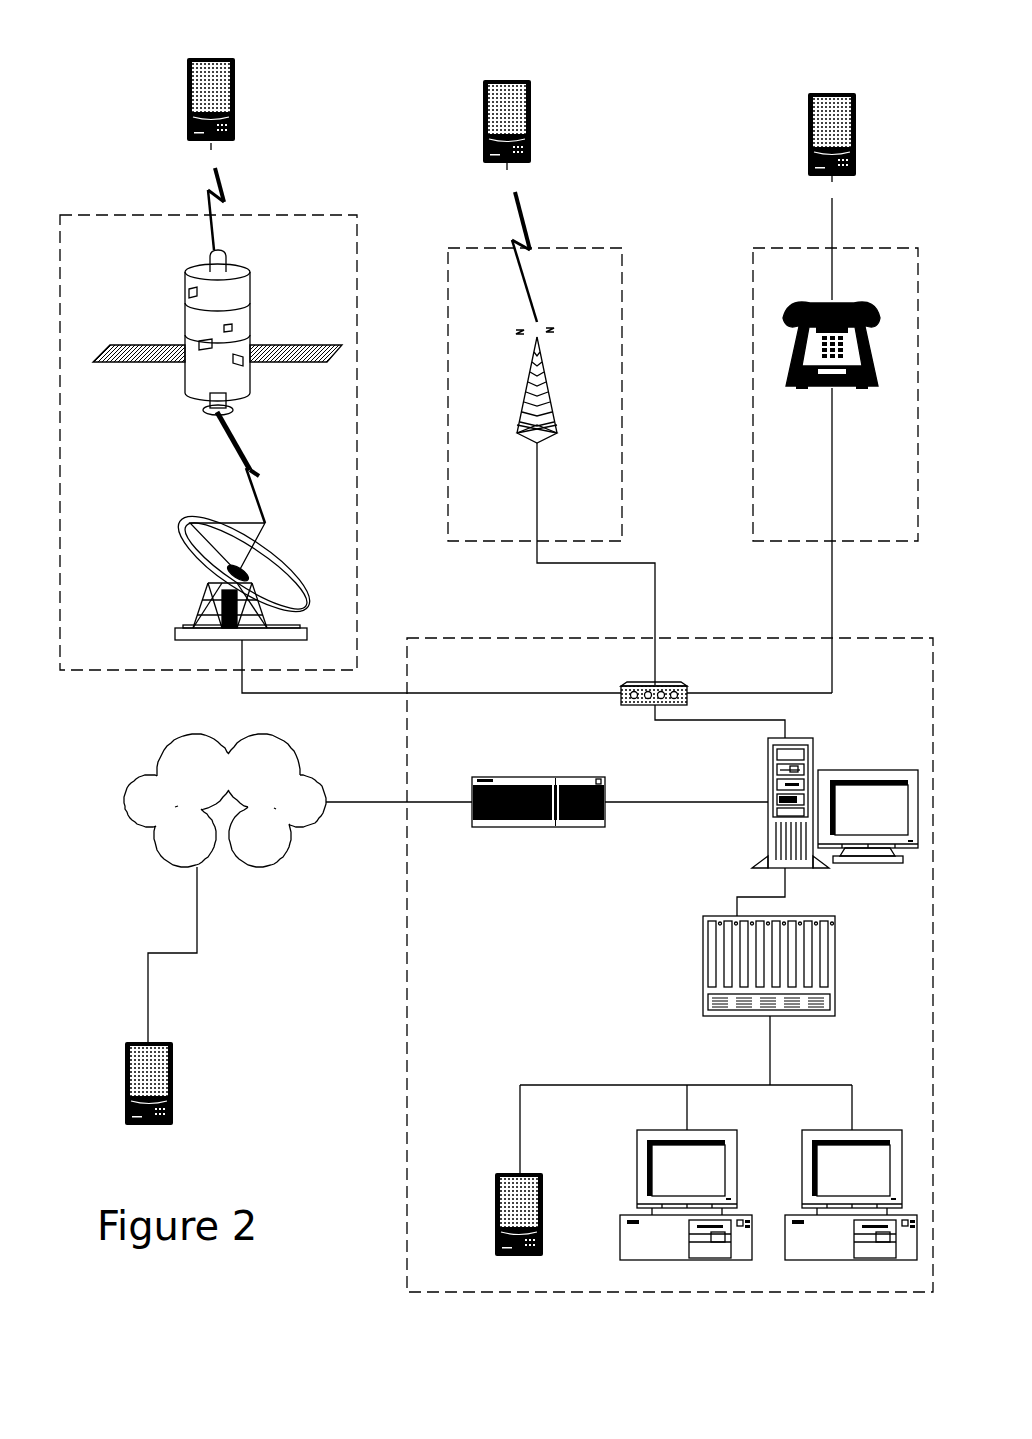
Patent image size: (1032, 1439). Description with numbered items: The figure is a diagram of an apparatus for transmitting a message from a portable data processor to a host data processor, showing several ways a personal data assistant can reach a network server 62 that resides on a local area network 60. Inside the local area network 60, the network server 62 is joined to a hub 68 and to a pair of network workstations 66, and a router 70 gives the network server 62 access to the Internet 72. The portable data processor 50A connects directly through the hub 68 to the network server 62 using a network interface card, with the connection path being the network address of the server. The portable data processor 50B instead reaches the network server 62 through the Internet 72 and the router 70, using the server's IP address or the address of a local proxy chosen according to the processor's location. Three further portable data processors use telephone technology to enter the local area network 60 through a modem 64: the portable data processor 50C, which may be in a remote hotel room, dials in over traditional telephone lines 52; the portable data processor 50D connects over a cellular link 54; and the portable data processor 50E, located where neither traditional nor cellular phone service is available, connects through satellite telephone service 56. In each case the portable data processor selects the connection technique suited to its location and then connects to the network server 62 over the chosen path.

The portable data processor 50A is at (495, 1215).
The portable data processor 50B is at (172, 1082).
The portable data processor 50C is at (808, 130).
The portable data processor 50D is at (532, 118).
The portable data processor 50E is at (237, 98).
The telephone lines 52 is at (766, 244).
The cellular link 54 is at (622, 378).
The satellite telephone service 56 is at (310, 214).
The local area network 60 is at (405, 1045).
The host data processor 62 is at (813, 760).
The modem 64 is at (690, 683).
The network workstation 66 is at (652, 1128).
The hub 68 is at (703, 950).
The router 70 is at (520, 777).
The Internet 72 is at (125, 793).